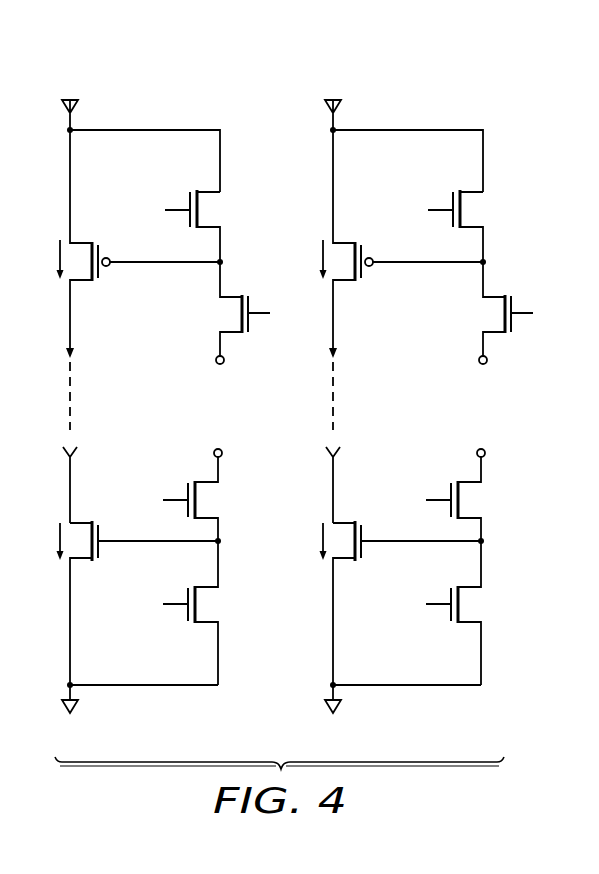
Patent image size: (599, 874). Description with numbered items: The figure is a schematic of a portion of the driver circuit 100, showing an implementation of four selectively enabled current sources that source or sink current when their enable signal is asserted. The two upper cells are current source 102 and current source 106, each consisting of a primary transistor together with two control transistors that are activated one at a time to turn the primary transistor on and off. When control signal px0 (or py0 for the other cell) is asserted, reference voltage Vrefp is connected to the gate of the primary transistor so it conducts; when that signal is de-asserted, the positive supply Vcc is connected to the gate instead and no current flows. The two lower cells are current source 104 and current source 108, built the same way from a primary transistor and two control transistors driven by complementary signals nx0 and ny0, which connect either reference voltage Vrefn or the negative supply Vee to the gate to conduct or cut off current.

The driver circuit 100 is at (158, 75).
The current source 102 is at (188, 263).
The current source 104 is at (186, 549).
The current source 106 is at (451, 263).
The current source 108 is at (449, 549).